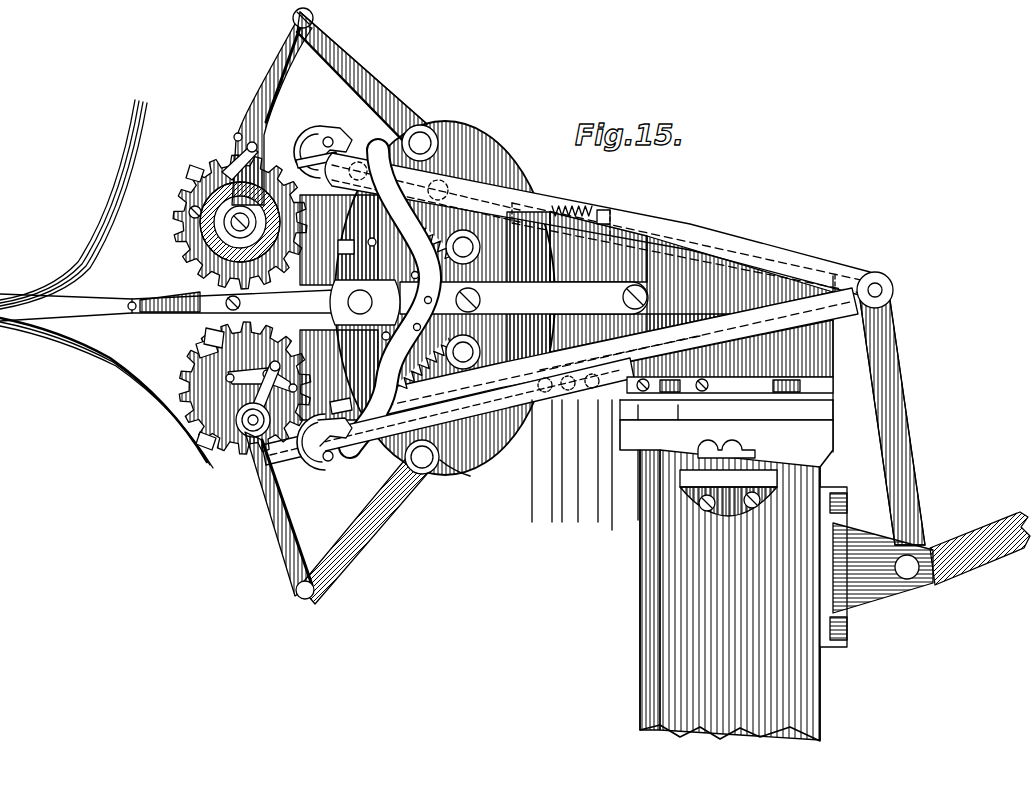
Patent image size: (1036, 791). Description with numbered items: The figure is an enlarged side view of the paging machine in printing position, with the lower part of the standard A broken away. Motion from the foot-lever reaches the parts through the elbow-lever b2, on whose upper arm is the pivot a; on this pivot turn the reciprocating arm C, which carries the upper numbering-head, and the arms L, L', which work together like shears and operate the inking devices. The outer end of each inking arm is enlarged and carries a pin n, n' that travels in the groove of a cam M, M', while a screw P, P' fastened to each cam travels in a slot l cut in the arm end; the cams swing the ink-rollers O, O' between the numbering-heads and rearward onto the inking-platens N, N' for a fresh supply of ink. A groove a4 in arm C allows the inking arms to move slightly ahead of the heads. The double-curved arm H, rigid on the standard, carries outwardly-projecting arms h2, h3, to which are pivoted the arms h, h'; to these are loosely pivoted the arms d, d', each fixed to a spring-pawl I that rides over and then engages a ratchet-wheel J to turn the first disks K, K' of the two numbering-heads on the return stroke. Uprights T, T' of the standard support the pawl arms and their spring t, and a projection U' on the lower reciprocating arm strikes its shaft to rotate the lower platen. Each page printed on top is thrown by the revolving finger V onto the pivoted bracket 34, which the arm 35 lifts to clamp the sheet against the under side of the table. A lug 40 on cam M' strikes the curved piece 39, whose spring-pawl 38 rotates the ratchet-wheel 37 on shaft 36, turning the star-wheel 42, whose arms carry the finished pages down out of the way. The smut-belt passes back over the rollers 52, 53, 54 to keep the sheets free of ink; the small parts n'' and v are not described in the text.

The arm d is at (272, 106).
The arm h is at (362, 79).
The outwardly-projecting arm h2 is at (422, 130).
The double-curved arm H is at (446, 125).
The ink-roller O is at (468, 152).
The inking-platen N is at (439, 176).
The screw P is at (354, 150).
The cam M is at (315, 138).
The pin n is at (322, 117).
The groove or slot l is at (312, 160).
The spring-pawl I is at (228, 168).
The ratchet-wheel J is at (190, 172).
The first disk K is at (224, 222).
The revolving finger V is at (135, 300).
The bracket or arm 34 is at (206, 334).
The curved piece 39 is at (198, 350).
The spring-pawl 38 is at (228, 392).
The first disk K' is at (230, 388).
The star-wheel 42 is at (204, 442).
The ratchet-wheel 37 is at (250, 428).
The shaft 36 is at (250, 437).
The cam M' is at (313, 465).
The pin n' is at (339, 476).
The screw P' is at (347, 446).
The arm d' is at (278, 514).
The arm h' is at (364, 527).
The outwardly-projecting arm h3 is at (423, 476).
The ink-roller O' is at (459, 482).
The inking-platen N' is at (448, 418).
The roller 52 is at (544, 393).
The roller 53 is at (567, 391).
The roller 54 is at (592, 389).
The projection U' is at (726, 398).
The upright T' is at (617, 354).
The arm L' is at (619, 332).
The standard or frame A is at (736, 612).
The elbow-lever b2 is at (986, 530).
The pivot a is at (893, 290).
The arm L is at (601, 226).
The reciprocating arm C is at (632, 246).
The block v is at (606, 210).
The spring t is at (572, 210).
The upright T is at (543, 268).
The groove a4 is at (340, 252).
The pin n'' is at (360, 233).
The arm 35 is at (384, 340).
The projection or lug 40 is at (341, 398).